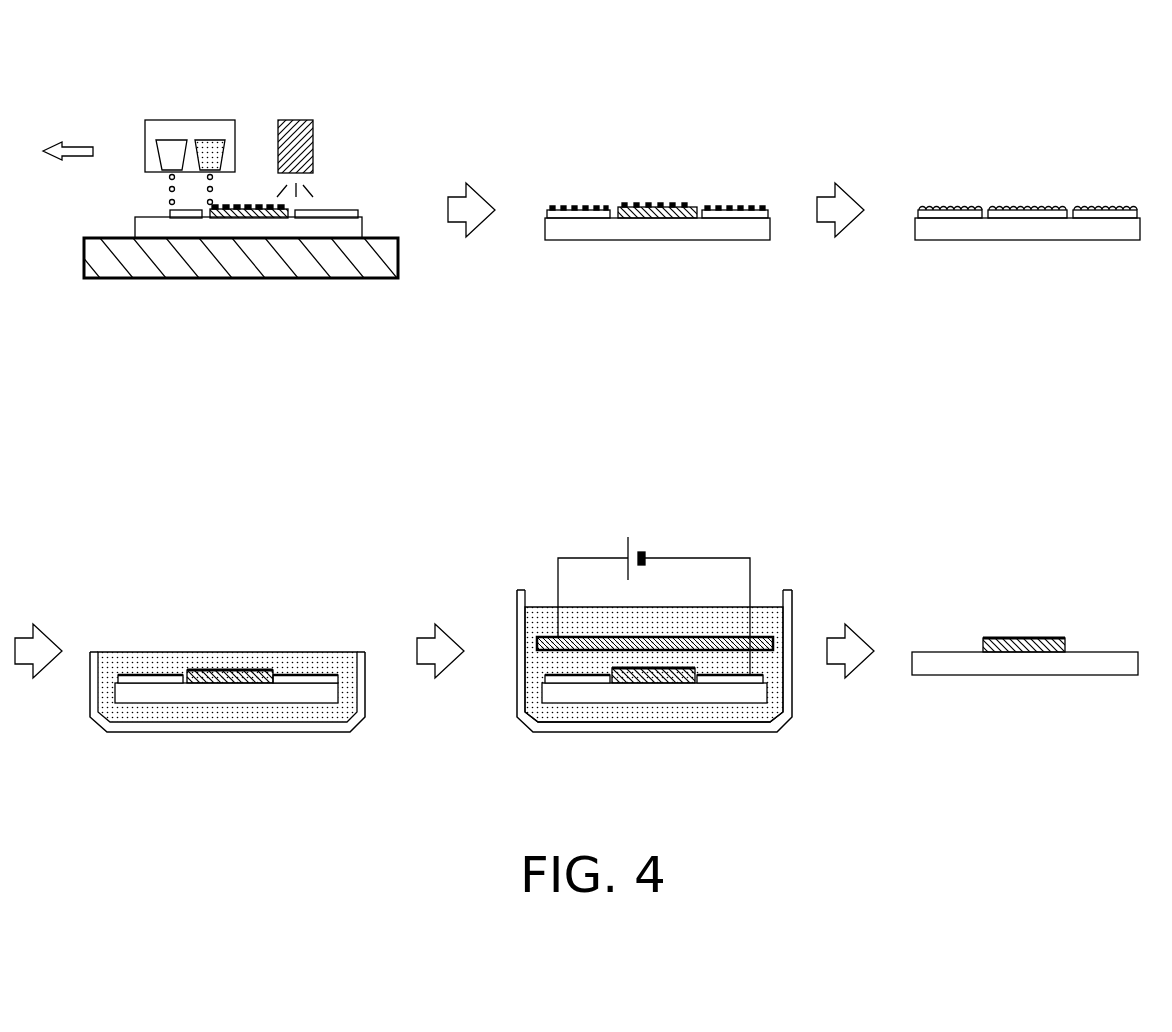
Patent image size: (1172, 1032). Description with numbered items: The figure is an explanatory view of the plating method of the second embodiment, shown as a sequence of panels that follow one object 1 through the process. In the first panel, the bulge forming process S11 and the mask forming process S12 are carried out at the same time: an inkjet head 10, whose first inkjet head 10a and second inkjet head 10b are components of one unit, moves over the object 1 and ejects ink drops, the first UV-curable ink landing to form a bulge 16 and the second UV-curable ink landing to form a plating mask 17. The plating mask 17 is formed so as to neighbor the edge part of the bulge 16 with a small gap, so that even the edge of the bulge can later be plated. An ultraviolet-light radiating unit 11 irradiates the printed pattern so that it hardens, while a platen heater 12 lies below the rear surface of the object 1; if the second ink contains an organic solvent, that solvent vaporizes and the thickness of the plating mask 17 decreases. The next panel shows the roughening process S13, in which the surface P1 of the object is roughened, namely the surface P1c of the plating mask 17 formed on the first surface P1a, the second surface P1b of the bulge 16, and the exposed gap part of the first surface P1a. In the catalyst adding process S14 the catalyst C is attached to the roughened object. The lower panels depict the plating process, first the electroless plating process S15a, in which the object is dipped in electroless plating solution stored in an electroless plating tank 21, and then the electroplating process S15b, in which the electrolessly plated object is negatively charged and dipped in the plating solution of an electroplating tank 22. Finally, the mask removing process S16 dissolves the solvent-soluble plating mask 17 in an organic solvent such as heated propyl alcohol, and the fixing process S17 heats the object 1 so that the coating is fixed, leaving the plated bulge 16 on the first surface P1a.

The object 1 is at (363, 224).
The inkjet head 10 is at (190, 118).
The first inkjet head 10a is at (173, 138).
The second inkjet head 10b is at (212, 138).
The ultraviolet-light radiating unit 11 is at (295, 120).
The platen heater 12 is at (253, 280).
The bulge 16 is at (248, 207).
The plating mask 17 is at (335, 209).
The electroless plating tank 21 is at (228, 733).
The electroplating tank 22 is at (658, 733).
The catalyst C is at (992, 207).
The surface P1 is at (633, 166).
The first surface P1a is at (557, 209).
The second surface P1b is at (693, 177).
The surface of the plating mask P1c is at (598, 207).
The bulge forming process S11 is at (246, 199).
The mask forming process S12 is at (393, 78).
The roughening process S13 is at (690, 110).
The catalyst adding process S14 is at (1060, 110).
The electroless plating process S15a is at (287, 587).
The electroplating process S15b is at (690, 485).
The mask removing process S16 is at (993, 605).
The fixing process S17 is at (1058, 587).